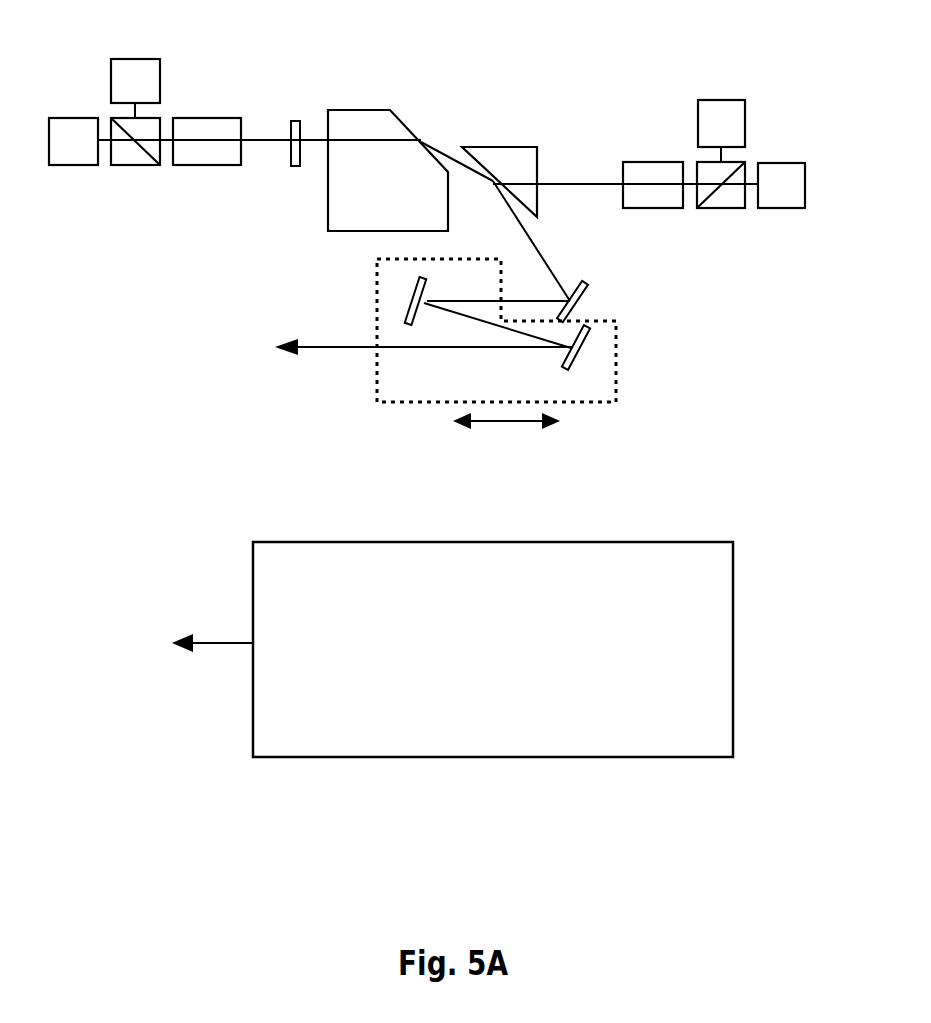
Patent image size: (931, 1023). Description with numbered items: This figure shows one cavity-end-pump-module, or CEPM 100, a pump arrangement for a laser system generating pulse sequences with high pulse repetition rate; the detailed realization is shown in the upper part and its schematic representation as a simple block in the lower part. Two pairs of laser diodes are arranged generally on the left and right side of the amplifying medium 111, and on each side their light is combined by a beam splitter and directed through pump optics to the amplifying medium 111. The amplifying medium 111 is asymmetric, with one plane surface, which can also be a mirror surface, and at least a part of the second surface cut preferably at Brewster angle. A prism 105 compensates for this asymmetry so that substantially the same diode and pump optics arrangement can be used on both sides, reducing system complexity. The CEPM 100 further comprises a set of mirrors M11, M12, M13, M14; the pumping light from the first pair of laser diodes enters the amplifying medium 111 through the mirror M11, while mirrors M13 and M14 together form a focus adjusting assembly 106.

The cavity-end-pump-module 100 is at (350, 540).
The prism 105 is at (512, 145).
The focus adjusting assembly 106 is at (588, 403).
The amplifying medium 111 is at (368, 105).
The mirror M11 is at (292, 128).
The mirror M12 is at (572, 312).
The mirror M13 is at (410, 313).
The mirror M14 is at (573, 362).